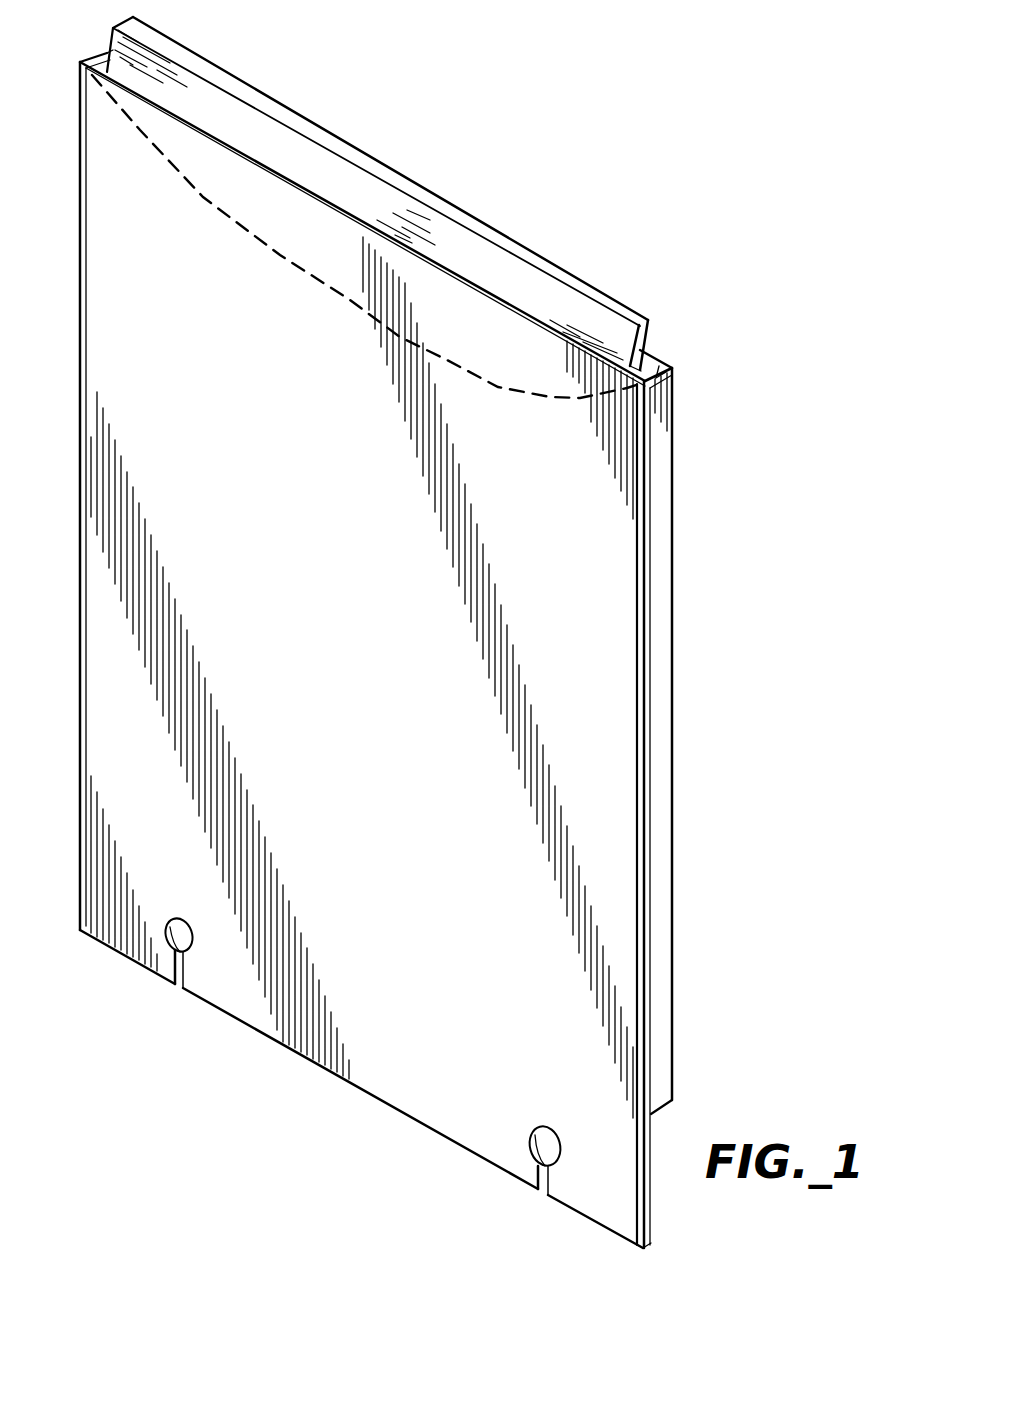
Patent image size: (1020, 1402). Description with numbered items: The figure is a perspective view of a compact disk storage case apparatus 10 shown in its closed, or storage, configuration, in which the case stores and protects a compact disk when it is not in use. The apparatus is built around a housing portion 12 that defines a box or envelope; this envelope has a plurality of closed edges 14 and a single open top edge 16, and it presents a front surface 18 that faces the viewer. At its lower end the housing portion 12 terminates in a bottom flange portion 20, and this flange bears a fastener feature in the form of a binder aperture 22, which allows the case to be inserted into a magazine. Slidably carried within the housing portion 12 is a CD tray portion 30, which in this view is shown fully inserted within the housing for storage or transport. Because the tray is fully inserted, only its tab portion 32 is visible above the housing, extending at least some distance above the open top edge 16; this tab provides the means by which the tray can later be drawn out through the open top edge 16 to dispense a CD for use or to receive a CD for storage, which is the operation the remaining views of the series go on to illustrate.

The compact disk storage case apparatus 10 is at (147, 1039).
The housing portion 12 is at (666, 835).
The closed edges 14 is at (666, 553).
The open top edge 16 is at (654, 358).
The front surface 18 is at (326, 621).
The bottom flange portion 20 is at (355, 1087).
The binder aperture 22 is at (536, 1155).
The CD tray portion 30 is at (503, 234).
The tab portion 32 is at (283, 105).